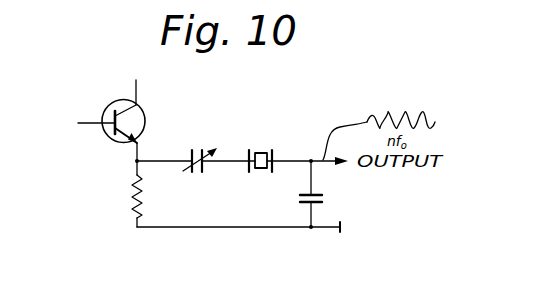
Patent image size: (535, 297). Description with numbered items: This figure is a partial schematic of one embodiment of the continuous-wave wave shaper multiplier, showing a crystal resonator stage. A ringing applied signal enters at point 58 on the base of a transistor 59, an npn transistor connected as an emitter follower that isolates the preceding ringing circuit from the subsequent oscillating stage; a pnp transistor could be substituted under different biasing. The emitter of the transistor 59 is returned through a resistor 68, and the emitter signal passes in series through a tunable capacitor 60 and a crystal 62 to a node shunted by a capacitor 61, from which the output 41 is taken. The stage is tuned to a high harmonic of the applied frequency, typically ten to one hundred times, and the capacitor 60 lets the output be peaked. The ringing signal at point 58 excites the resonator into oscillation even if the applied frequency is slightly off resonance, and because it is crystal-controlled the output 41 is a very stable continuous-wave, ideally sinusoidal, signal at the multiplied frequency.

The output 41 is at (392, 110).
The point 58 is at (88, 124).
The transistor 59 is at (104, 116).
The capacitor 60 is at (193, 146).
The capacitor 61 is at (322, 198).
The crystal 62 is at (265, 144).
The resistor 68 is at (147, 193).